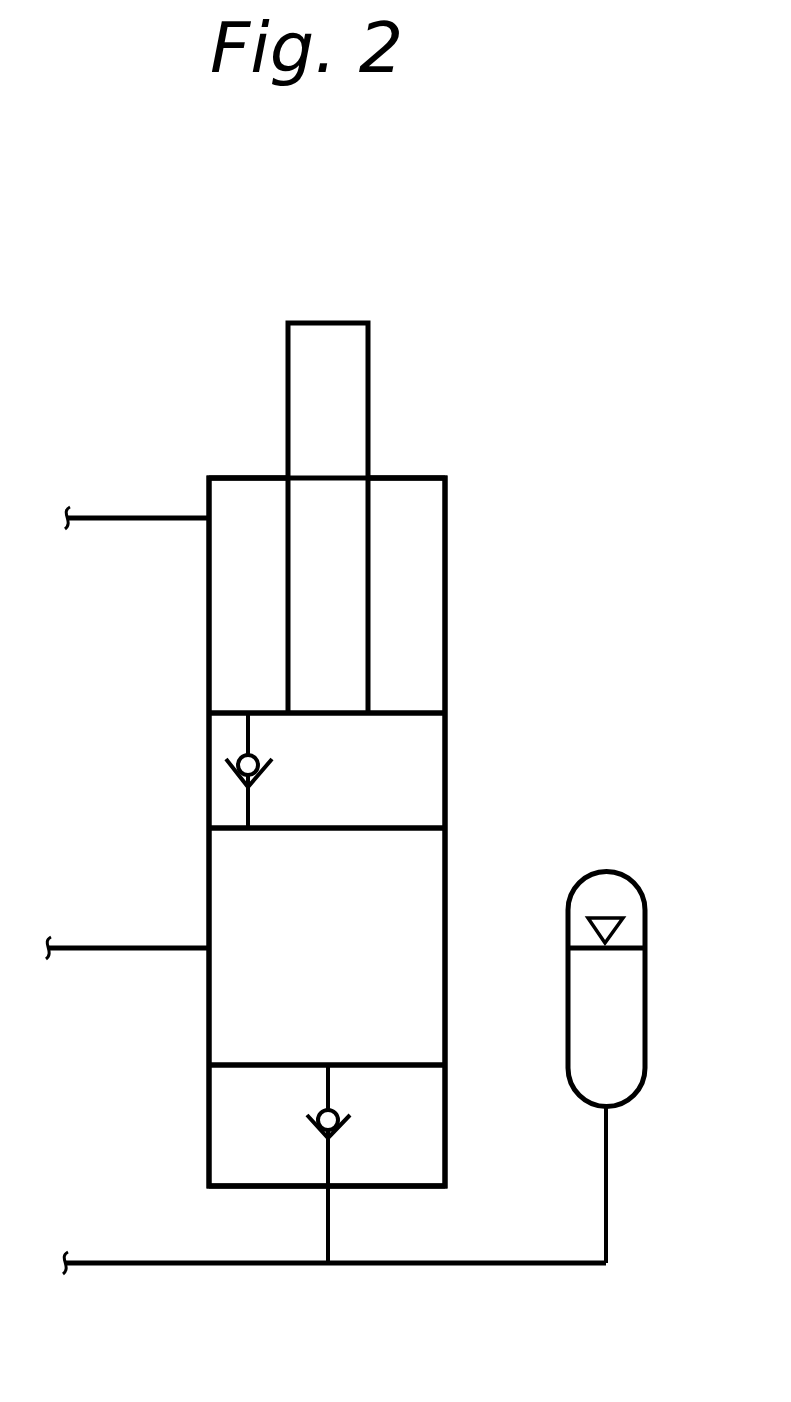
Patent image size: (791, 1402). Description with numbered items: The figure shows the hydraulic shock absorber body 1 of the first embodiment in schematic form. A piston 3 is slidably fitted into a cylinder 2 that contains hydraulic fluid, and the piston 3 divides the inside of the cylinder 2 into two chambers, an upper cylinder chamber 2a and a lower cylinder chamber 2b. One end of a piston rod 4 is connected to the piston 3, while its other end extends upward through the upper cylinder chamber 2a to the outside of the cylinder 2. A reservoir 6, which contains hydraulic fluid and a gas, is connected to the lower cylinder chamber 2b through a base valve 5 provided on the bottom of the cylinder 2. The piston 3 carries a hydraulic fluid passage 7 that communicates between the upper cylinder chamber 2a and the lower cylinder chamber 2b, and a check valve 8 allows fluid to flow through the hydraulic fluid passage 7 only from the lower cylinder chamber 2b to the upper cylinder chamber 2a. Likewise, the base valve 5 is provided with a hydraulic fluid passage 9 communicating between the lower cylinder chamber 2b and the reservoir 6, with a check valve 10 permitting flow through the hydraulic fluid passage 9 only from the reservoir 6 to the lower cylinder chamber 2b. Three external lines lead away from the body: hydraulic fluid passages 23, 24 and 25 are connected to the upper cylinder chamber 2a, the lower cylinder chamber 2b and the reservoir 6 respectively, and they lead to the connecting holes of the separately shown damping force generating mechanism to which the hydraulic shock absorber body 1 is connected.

The hydraulic shock absorber body 1 is at (580, 332).
The cylinder 2 is at (447, 503).
The upper cylinder chamber 2a is at (423, 623).
The lower cylinder chamber 2b is at (427, 880).
The piston 3 is at (425, 755).
The piston rod 4 is at (300, 368).
The base valve 5 is at (232, 1130).
The reservoir 6 is at (648, 915).
The hydraulic fluid passage 7 is at (248, 730).
The check valve 8 is at (228, 777).
The hydraulic fluid passage 9 is at (325, 1079).
The check valve 10 is at (310, 1122).
The hydraulic fluid passage 23 is at (125, 518).
The hydraulic fluid passage 24 is at (108, 948).
The hydraulic fluid passage 25 is at (180, 1263).